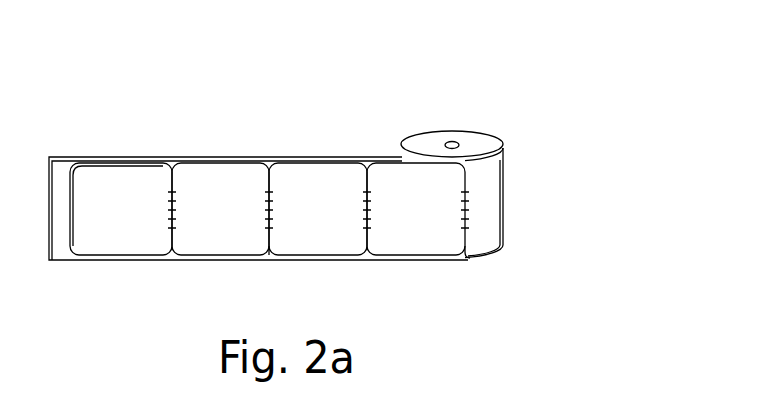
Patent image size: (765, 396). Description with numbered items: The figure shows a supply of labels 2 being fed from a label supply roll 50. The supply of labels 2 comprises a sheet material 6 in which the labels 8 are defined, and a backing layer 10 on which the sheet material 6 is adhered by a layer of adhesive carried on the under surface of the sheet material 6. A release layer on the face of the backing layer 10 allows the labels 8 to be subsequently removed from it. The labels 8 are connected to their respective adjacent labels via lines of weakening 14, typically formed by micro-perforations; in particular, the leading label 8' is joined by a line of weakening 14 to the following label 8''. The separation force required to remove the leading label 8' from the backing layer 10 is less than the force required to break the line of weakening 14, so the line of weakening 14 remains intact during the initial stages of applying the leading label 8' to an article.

The supply of labels 2 is at (127, 243).
The leading label 8' is at (121, 162).
The following label 8'' is at (228, 162).
The labels 8 is at (367, 161).
The line of weakening 14 is at (176, 166).
The sheet material 6 is at (487, 222).
The label supply roll 50 is at (473, 140).
The backing layer 10 is at (270, 255).